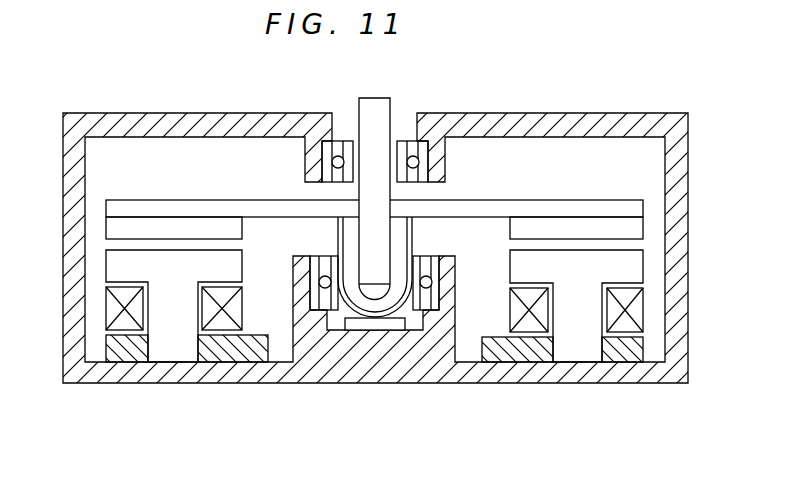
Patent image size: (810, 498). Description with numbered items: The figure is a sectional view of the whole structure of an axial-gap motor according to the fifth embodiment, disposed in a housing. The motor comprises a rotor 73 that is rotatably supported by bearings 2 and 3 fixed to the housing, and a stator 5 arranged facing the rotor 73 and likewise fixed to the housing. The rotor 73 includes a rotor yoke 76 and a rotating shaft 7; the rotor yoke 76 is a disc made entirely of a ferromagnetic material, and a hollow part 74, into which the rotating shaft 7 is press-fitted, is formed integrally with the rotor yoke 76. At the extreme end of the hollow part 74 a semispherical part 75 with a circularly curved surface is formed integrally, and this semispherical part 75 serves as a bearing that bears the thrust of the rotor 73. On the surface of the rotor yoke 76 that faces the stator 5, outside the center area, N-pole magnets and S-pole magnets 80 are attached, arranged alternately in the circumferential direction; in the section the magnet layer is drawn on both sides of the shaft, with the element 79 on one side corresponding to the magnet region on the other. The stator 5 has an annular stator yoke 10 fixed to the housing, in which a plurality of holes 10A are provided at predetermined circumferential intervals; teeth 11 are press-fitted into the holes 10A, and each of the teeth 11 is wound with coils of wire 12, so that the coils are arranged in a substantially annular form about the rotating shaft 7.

The bearing 2 is at (424, 152).
The bearing 3 is at (437, 276).
The stator 5 is at (649, 268).
The rotating shaft 7 is at (385, 112).
The stator yoke 10 is at (377, 358).
The holes 10A is at (192, 348).
The teeth 11 is at (173, 332).
The coils of wire 12 is at (110, 312).
The rotor 73 is at (374, 232).
The hollow part 74 is at (400, 238).
The semispherical part 75 is at (371, 306).
The rotor yoke 76 is at (245, 208).
The rotor yoke 79 is at (138, 226).
The S-pole magnets 80 is at (596, 228).